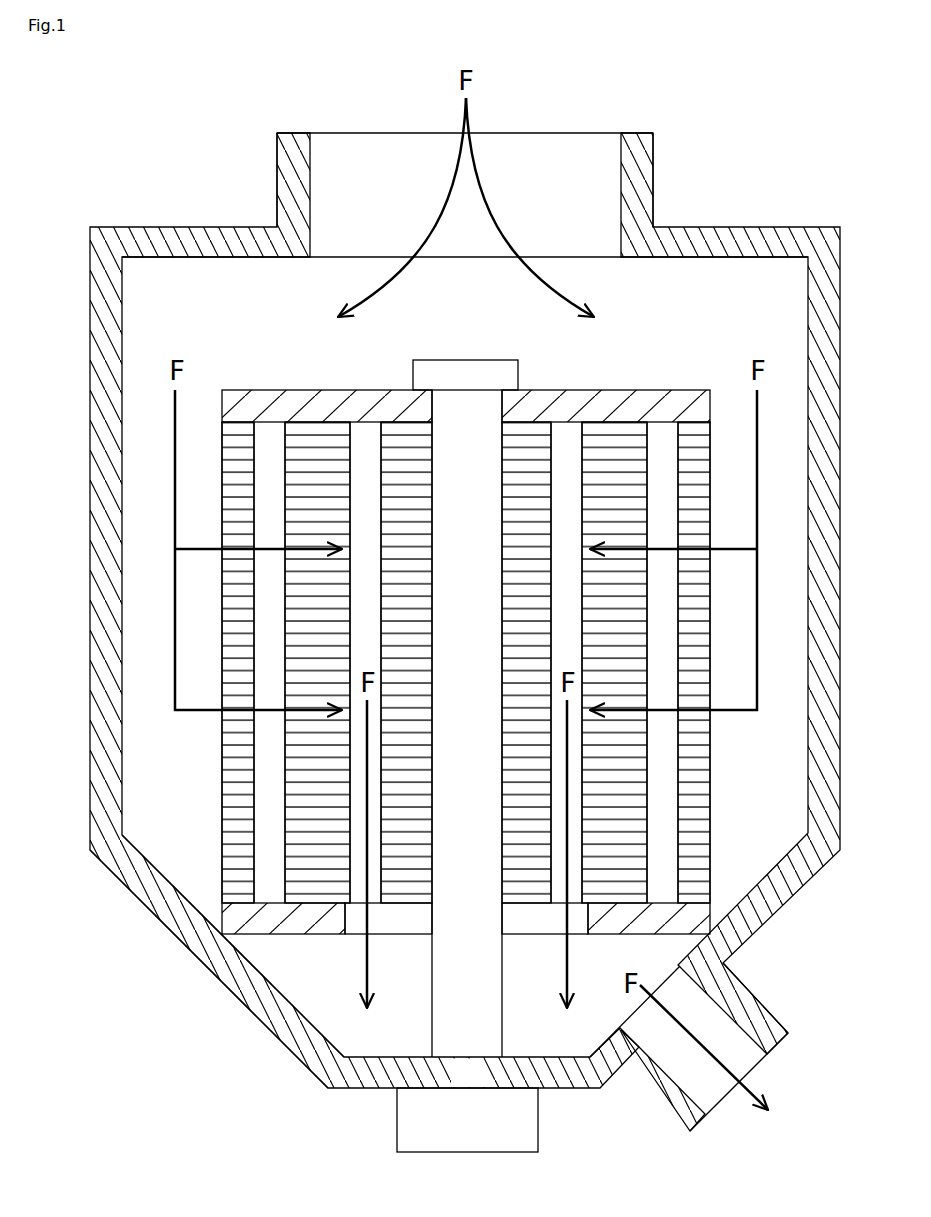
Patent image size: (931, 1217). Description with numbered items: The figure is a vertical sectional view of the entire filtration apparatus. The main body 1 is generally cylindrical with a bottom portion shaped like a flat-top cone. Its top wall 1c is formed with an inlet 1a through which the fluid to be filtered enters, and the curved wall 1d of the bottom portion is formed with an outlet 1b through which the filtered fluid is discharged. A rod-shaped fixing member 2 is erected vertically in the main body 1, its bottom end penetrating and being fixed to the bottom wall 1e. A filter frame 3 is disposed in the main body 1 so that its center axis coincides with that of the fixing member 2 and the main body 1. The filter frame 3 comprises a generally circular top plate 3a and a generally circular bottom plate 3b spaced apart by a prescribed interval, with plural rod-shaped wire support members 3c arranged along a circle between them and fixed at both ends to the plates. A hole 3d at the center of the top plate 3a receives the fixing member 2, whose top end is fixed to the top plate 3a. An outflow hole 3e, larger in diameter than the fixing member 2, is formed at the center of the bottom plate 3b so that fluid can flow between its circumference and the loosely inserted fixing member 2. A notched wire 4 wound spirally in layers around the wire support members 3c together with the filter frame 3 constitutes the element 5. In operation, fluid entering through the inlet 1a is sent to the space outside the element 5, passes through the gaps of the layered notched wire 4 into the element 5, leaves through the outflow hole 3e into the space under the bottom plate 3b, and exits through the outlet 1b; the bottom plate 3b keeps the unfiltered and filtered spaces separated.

The main body 1 is at (481, 622).
The inlet 1a is at (590, 147).
The outlet 1b is at (732, 1018).
The top wall 1c is at (702, 233).
The curved wall 1d is at (251, 992).
The bottom wall 1e is at (570, 1082).
The fixing member 2 is at (445, 1045).
The filter frame 3 is at (452, 655).
The top plate 3a is at (272, 390).
The bottom plate 3b is at (233, 927).
The wire support members 3c is at (578, 772).
The hole 3d is at (503, 408).
The outflow hole 3e is at (355, 927).
The notched wire 4 is at (688, 463).
The element 5 is at (718, 462).